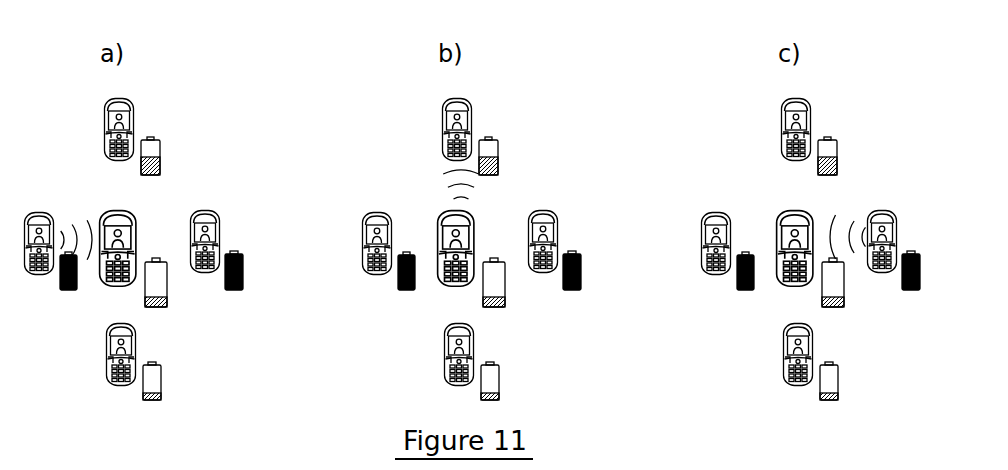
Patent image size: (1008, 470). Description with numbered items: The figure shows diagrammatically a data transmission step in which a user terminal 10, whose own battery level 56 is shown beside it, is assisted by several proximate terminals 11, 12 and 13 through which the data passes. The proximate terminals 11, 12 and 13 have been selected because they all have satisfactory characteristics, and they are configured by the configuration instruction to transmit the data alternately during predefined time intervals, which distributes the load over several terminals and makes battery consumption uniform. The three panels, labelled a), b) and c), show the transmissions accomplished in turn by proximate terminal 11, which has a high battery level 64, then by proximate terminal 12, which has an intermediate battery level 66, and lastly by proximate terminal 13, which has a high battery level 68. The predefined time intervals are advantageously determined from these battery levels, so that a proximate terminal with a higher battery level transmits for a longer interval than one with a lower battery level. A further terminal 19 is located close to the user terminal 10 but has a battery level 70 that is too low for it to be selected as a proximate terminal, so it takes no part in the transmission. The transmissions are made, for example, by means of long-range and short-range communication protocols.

The user terminal 10 is at (114, 211).
The proximate terminal 11 is at (42, 212).
The proximate terminal 12 is at (131, 109).
The proximate terminal 13 is at (213, 213).
The terminal 19 is at (106, 348).
The battery level 56 is at (167, 291).
The battery level 64 is at (72, 291).
The battery level 66 is at (160, 163).
The battery level 68 is at (233, 291).
The battery level 70 is at (161, 383).